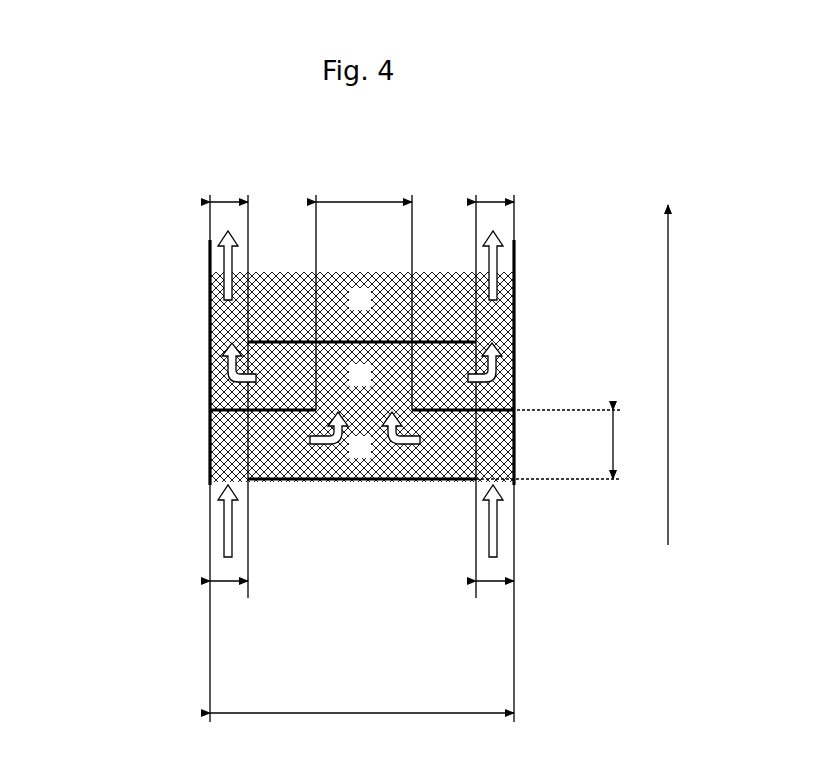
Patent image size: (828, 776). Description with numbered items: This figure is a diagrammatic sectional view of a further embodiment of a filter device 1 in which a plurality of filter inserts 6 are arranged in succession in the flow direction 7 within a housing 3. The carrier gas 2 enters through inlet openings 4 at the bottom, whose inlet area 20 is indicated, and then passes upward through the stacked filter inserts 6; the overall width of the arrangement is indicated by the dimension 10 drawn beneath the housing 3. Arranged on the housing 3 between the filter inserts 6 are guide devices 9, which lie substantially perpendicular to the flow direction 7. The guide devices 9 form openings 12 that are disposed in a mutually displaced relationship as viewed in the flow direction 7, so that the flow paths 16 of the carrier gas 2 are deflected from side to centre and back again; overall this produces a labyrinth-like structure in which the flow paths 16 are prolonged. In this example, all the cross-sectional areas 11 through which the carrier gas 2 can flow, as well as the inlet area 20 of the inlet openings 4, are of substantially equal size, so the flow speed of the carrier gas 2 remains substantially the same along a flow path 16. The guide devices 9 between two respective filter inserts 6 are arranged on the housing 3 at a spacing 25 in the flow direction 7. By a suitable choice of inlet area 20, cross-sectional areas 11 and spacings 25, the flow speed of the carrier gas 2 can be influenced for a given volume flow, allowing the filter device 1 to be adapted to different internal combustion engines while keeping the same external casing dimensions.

The filter device 1 is at (183, 248).
The carrier gas 2 is at (490, 548).
The housing 3 is at (517, 265).
The inlet openings 4 is at (240, 487).
The filter inserts 6 is at (368, 458).
The flow direction 7 is at (682, 375).
The guide devices 9 is at (298, 338).
The overall width 10 is at (362, 729).
The cross-sectional areas 11 is at (498, 198).
The openings 12 is at (207, 325).
The flow paths 16 is at (410, 482).
The inlet area 20 is at (490, 586).
The spacing 25 is at (531, 444).